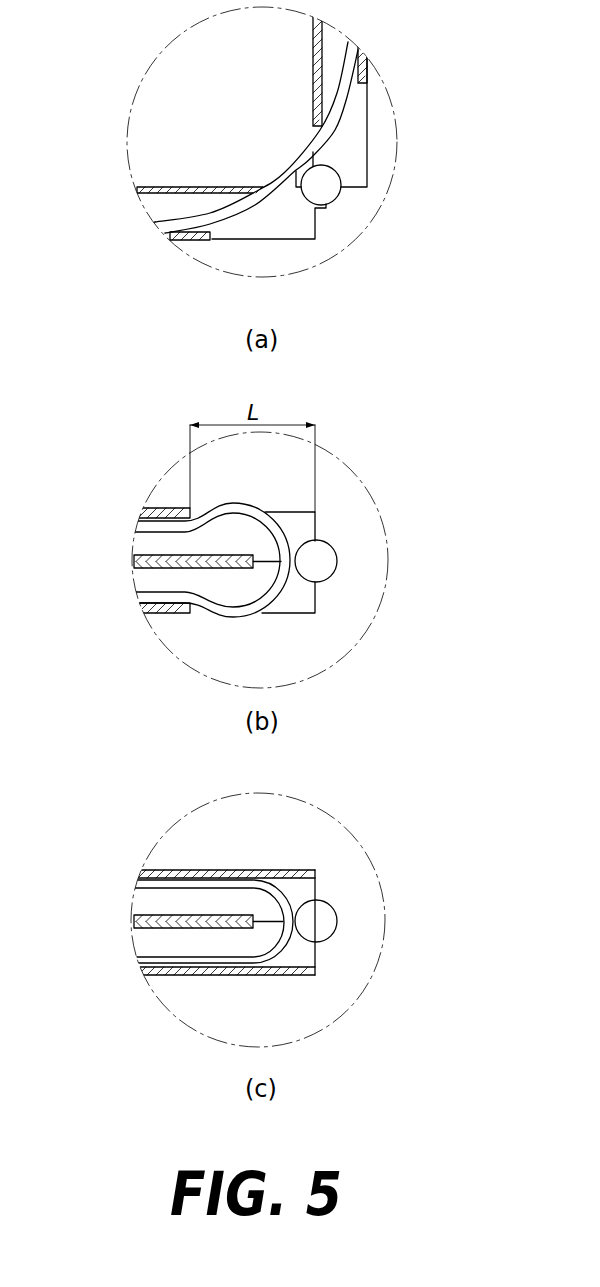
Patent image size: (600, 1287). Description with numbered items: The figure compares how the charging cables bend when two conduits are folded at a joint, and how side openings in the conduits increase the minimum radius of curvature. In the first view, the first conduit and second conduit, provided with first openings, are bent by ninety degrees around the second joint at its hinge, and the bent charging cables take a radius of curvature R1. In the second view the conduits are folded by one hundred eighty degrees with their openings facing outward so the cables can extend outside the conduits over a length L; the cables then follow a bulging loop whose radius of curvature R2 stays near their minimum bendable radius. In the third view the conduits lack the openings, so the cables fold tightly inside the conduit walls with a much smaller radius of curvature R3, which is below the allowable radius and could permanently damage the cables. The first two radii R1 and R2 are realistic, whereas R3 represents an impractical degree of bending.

The radius of curvature R1 is at (272, 176).
The minimum bendable radius of curvature R2 is at (302, 532).
The radius of curvature R3 is at (302, 950).